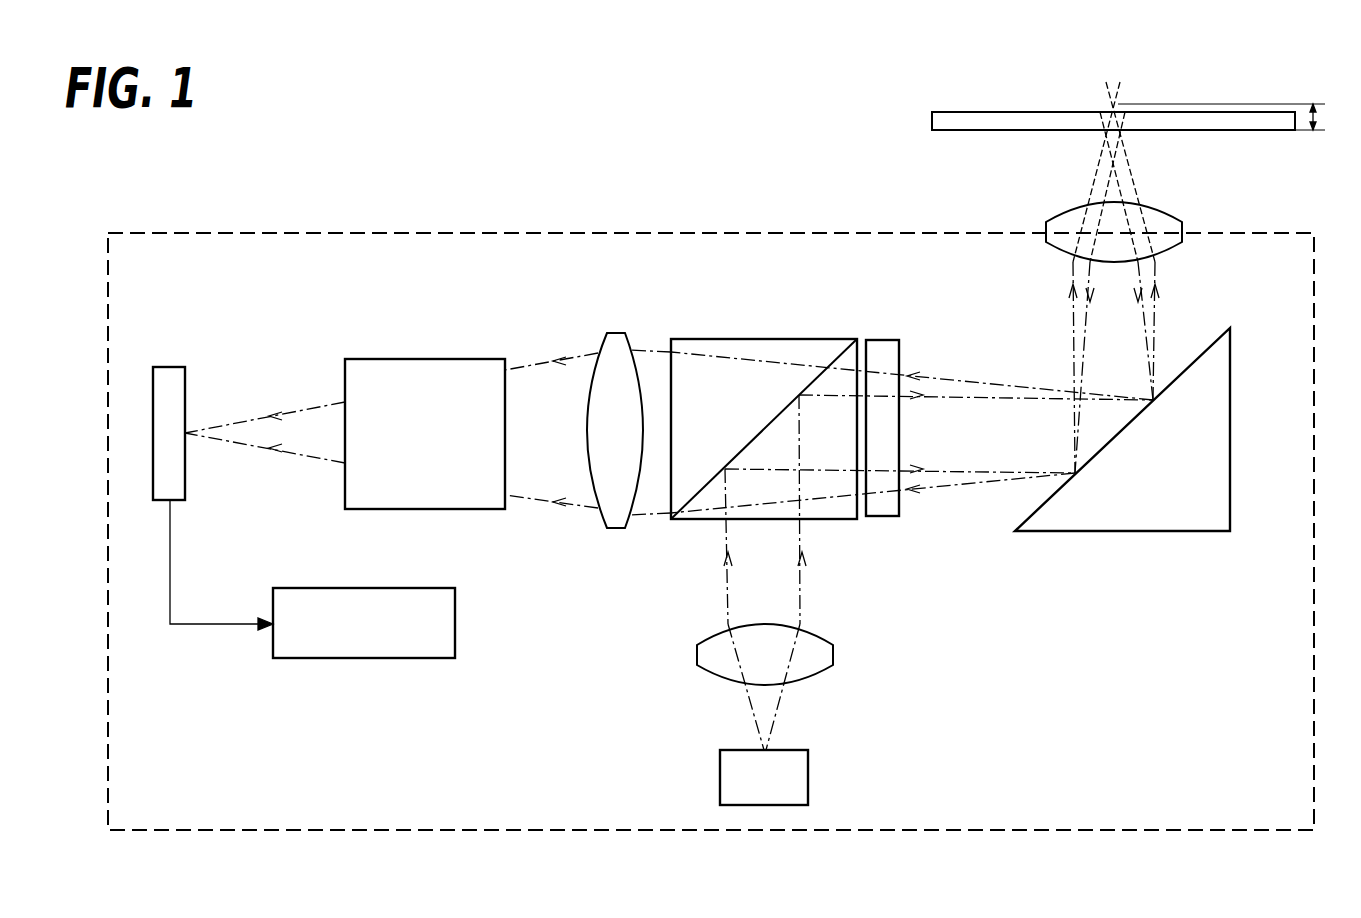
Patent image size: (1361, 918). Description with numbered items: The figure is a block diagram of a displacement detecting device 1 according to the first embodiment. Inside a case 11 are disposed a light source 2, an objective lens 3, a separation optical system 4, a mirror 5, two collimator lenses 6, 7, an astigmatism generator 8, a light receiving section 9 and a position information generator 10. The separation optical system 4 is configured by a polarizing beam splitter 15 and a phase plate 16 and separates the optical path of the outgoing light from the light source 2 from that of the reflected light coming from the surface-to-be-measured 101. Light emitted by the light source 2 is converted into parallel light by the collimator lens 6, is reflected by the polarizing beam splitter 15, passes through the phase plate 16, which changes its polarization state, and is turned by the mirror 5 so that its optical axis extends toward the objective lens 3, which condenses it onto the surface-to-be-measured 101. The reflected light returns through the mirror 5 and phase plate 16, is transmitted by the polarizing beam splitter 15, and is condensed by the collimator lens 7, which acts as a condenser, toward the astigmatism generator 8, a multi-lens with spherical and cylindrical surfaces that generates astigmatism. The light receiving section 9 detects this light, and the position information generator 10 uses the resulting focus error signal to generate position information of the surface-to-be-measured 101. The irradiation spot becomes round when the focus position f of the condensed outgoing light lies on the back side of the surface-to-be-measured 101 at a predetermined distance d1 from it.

The displacement detecting device 1 is at (721, 219).
The light source 2 is at (806, 780).
The objective lens 3 is at (1163, 216).
The separation optical system 4 is at (866, 529).
The mirror 5 is at (1193, 528).
The collimator lens 6 is at (827, 656).
The collimator lens 7 is at (617, 338).
The astigmatism generator 8 is at (417, 367).
The light receiving section 9 is at (169, 370).
The position information generator 10 is at (385, 590).
The case 11 is at (624, 232).
The polarizing beam splitter 15 is at (762, 343).
The phase plate 16 is at (880, 345).
The surface-to-be-measured 101 is at (957, 132).
The focus position f is at (1113, 103).
The predetermined distance d1 is at (1233, 119).